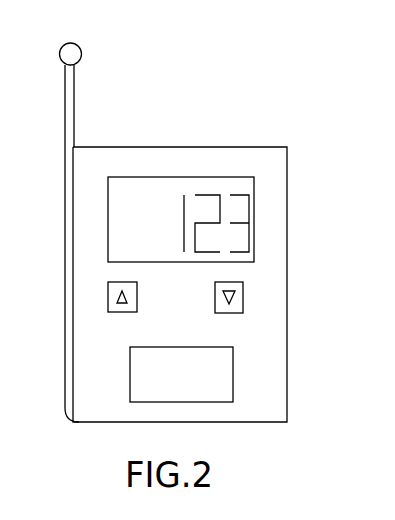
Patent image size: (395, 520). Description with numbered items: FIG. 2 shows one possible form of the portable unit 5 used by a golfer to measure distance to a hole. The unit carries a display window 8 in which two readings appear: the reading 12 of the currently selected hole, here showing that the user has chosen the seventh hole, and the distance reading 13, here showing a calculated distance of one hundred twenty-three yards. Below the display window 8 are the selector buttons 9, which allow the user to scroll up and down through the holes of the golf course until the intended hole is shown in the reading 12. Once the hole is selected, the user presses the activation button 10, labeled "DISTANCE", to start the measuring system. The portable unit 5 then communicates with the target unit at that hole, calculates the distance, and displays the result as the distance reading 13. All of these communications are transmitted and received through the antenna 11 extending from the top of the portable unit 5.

The portable unit 5 is at (243, 148).
The display window 8 is at (255, 190).
The selector buttons 9 is at (137, 300).
The activation button 10 is at (233, 378).
The antenna 11 is at (73, 107).
The reading 12 is at (142, 200).
The distance reading 13 is at (213, 197).